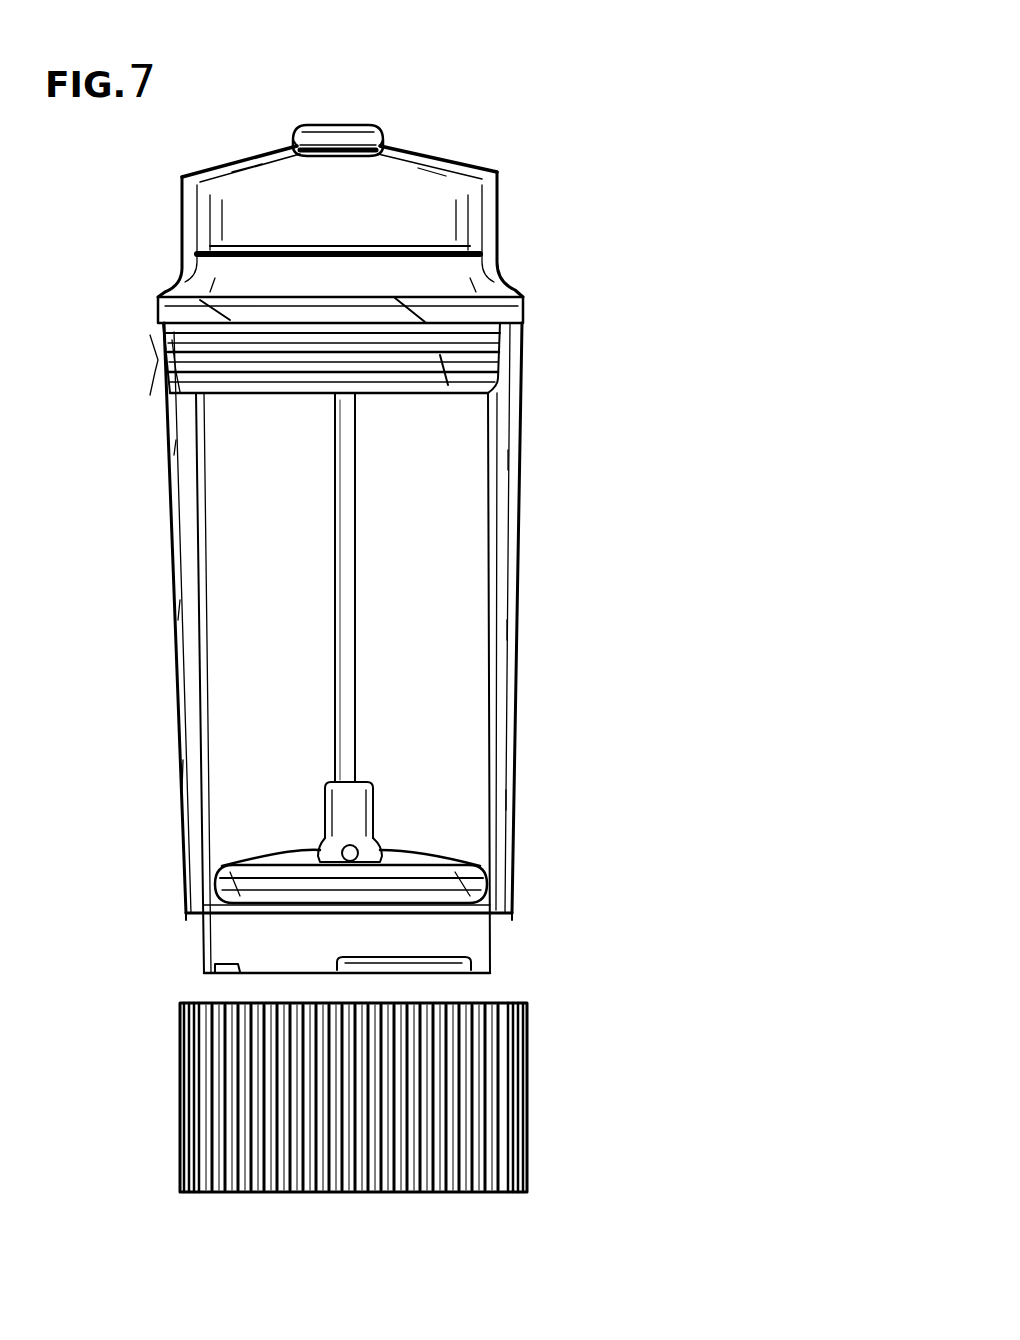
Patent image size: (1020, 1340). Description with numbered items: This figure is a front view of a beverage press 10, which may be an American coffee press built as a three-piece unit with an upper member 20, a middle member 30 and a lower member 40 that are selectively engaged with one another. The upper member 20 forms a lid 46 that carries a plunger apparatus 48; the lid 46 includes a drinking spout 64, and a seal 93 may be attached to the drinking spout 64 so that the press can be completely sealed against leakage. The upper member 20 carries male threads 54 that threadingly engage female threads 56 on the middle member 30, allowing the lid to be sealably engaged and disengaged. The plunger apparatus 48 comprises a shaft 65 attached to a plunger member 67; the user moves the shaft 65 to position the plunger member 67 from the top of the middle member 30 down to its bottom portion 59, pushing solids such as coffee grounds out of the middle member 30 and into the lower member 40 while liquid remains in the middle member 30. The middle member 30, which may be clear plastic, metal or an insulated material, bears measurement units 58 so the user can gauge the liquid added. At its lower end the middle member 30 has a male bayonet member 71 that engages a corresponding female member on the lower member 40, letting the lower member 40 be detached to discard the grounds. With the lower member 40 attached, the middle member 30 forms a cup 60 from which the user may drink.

The beverage press 10 is at (745, 543).
The upper member 20 is at (513, 267).
The middle member 30 is at (177, 595).
The lower member 40 is at (528, 1097).
The lid 46 is at (505, 180).
The plunger apparatus 48 is at (213, 887).
The male threads 54 is at (523, 338).
The female threads 56 is at (177, 368).
The units 58 is at (533, 722).
The bottom portion 59 is at (507, 922).
The cup 60 is at (587, 802).
The drinking spout 64 is at (383, 138).
The shaft 65 is at (333, 657).
The plunger member 67 is at (477, 850).
The male bayonet member 71 is at (500, 960).
The seal 93 is at (352, 127).